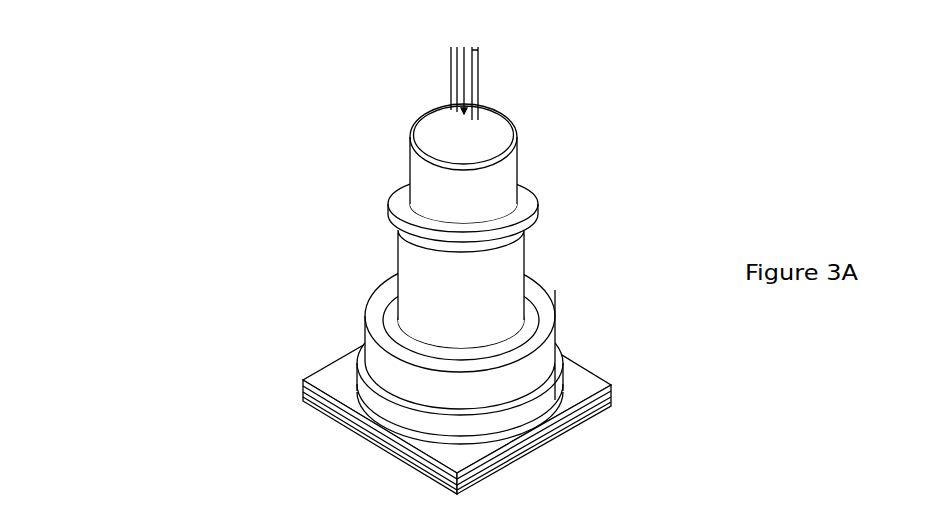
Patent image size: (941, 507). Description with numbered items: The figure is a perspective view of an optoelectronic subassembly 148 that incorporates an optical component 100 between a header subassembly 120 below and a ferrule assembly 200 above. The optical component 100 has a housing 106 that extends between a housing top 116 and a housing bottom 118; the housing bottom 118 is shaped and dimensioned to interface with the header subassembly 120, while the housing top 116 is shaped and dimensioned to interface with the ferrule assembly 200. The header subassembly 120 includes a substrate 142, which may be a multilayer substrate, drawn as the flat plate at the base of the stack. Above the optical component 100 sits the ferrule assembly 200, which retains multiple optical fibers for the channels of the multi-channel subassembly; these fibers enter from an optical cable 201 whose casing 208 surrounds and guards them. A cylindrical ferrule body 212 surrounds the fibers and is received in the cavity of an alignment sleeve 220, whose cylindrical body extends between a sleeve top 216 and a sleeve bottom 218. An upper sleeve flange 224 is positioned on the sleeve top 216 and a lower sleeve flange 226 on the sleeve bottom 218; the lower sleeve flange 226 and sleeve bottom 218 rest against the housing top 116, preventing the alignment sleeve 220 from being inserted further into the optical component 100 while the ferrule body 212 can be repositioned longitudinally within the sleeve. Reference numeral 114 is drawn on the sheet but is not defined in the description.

The optical component 100 is at (312, 342).
The housing 106 is at (533, 378).
The base flange lower edge 114 is at (535, 412).
The housing top 116 is at (355, 320).
The housing bottom 118 is at (347, 378).
The header subassembly 120 is at (290, 421).
The substrate 142 is at (372, 438).
The optoelectronic subassembly 148 is at (215, 238).
The ferrule assembly 200 is at (412, 107).
The optical cable 201 is at (440, 48).
The casing 208 is at (473, 70).
The ferrule body 212 is at (425, 180).
The sleeve top 216 is at (378, 202).
The sleeve bottom 218 is at (396, 299).
The alignment sleeve 220 is at (510, 280).
The upper sleeve flange 224 is at (533, 227).
The lower sleeve flange 226 is at (525, 329).